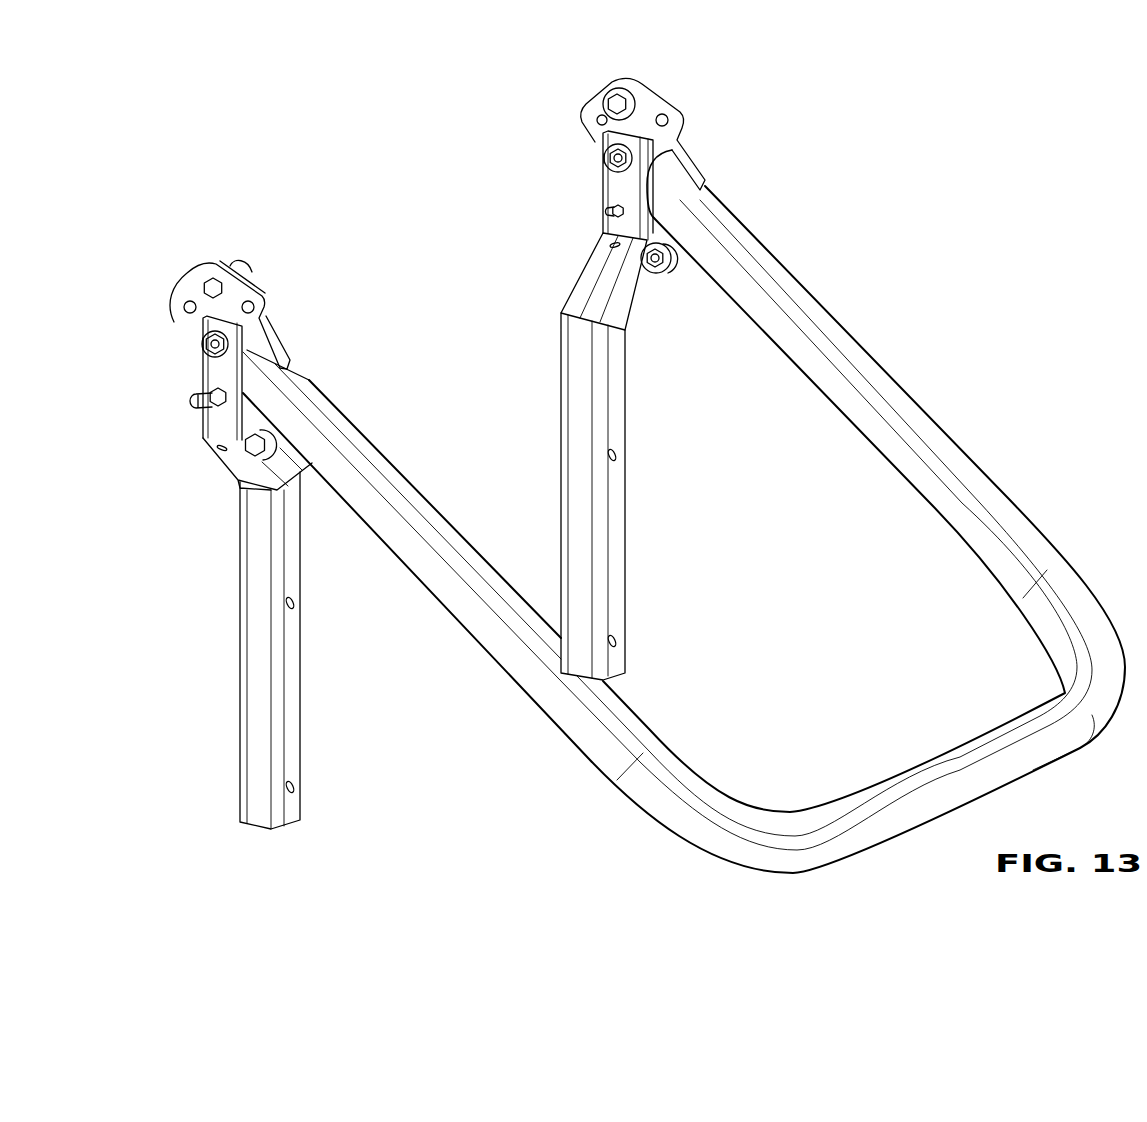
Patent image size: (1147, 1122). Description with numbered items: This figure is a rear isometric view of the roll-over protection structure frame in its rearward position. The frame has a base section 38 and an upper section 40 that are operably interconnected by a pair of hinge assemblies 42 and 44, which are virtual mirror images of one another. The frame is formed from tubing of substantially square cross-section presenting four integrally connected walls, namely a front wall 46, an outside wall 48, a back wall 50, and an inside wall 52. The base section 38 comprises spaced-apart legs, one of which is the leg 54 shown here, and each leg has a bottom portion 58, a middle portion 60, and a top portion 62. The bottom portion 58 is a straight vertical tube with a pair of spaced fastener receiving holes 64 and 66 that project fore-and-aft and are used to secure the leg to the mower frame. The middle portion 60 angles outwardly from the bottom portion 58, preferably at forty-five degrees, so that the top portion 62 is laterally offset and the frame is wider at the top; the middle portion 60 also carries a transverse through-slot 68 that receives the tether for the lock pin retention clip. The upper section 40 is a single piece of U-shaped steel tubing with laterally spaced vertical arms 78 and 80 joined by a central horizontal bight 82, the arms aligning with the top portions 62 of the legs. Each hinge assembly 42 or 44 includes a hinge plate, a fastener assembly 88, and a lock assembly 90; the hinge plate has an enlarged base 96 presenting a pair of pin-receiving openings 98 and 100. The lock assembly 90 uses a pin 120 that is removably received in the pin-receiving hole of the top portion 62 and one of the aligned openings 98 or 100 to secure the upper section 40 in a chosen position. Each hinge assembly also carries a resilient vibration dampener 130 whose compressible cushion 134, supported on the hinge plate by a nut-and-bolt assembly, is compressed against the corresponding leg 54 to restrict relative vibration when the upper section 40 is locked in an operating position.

The base section 38 is at (650, 511).
The upper section 40 is at (650, 511).
The hinge assembly 42 is at (262, 222).
The hinge assembly 44 is at (674, 140).
The front wall 46 is at (650, 511).
The outside wall 48 is at (650, 511).
The back wall 50 is at (433, 596).
The inside wall 52 is at (580, 408).
The leg 54 is at (189, 456).
The bottom portion 58 is at (240, 627).
The middle portion 60 is at (582, 303).
The top portion 62 is at (203, 428).
The fastener receiving hole 64 is at (619, 641).
The fastener receiving hole 66 is at (619, 456).
The transverse through-slot 68 is at (610, 246).
The vertical arm 78 is at (650, 511).
The vertical arm 80 is at (650, 511).
The central horizontal bight 82 is at (873, 345).
The fastener assembly 88 is at (205, 348).
The lock assembly 90 is at (469, 240).
The enlarged base 96 is at (674, 70).
The pin-receiving opening 98 is at (189, 310).
The pin-receiving opening 100 is at (254, 300).
The pin 120 is at (190, 401).
The vibration dampener 130 is at (218, 266).
The compressible cushion 134 is at (670, 270).